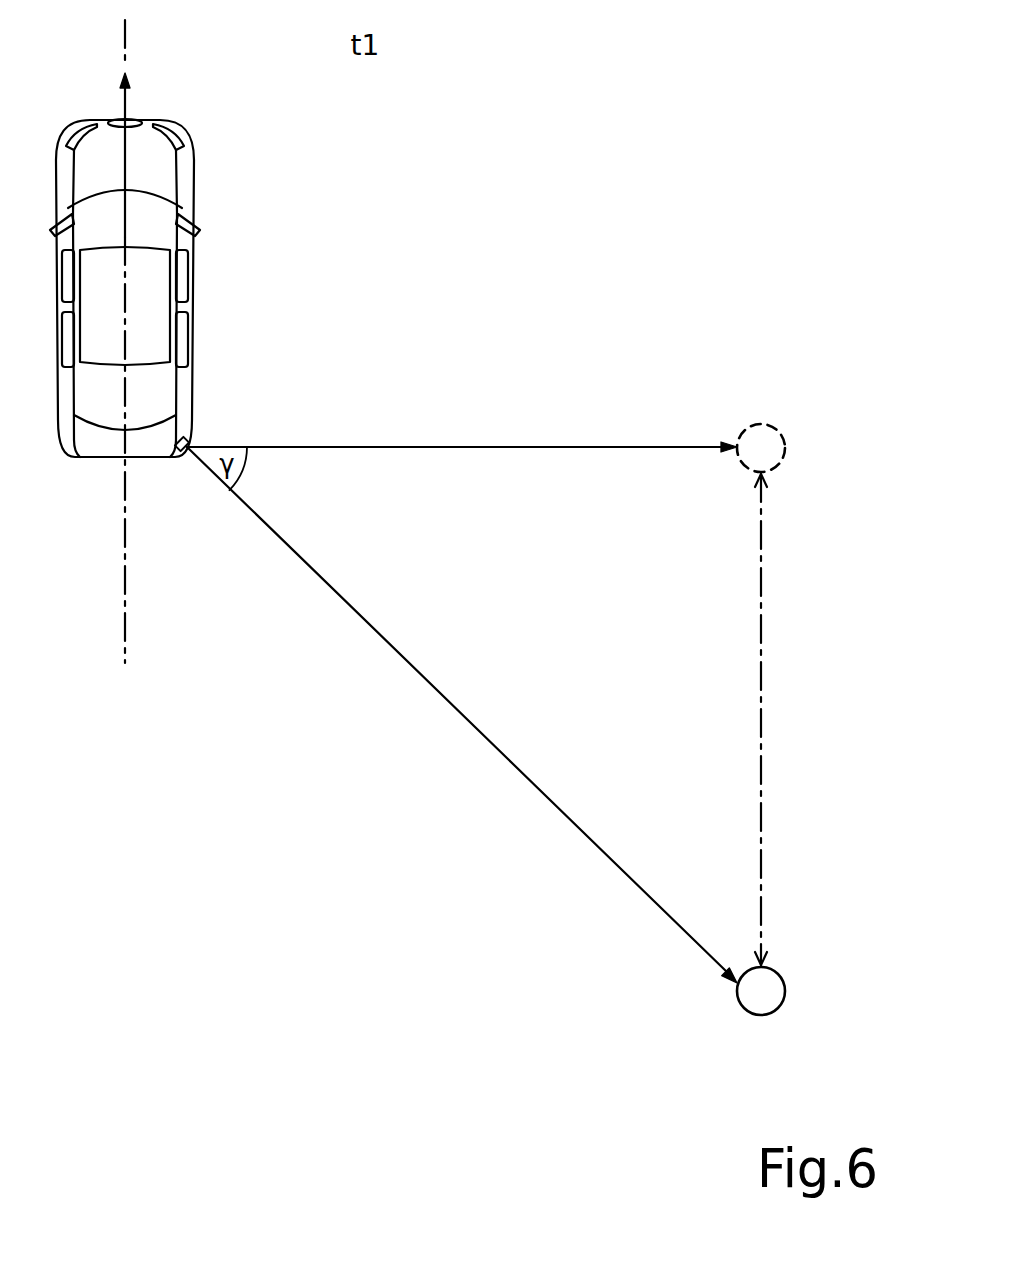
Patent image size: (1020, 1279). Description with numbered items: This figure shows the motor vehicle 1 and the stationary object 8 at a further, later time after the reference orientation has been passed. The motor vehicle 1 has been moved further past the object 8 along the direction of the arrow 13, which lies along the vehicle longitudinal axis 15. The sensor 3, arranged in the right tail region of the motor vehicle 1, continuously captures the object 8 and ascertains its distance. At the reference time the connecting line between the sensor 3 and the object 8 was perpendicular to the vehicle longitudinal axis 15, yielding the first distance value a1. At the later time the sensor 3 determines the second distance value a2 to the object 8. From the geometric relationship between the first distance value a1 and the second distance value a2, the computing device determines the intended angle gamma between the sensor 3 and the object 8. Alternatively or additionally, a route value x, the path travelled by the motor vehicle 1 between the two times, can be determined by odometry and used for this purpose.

The motor vehicle 1 is at (102, 120).
The sensor 3 is at (187, 433).
The object 8 is at (778, 430).
The arrow 13 is at (130, 73).
The vehicle longitudinal axis 15 is at (125, 582).
The first distance value a1 is at (520, 447).
The second distance value a2 is at (440, 702).
The route value x is at (761, 653).